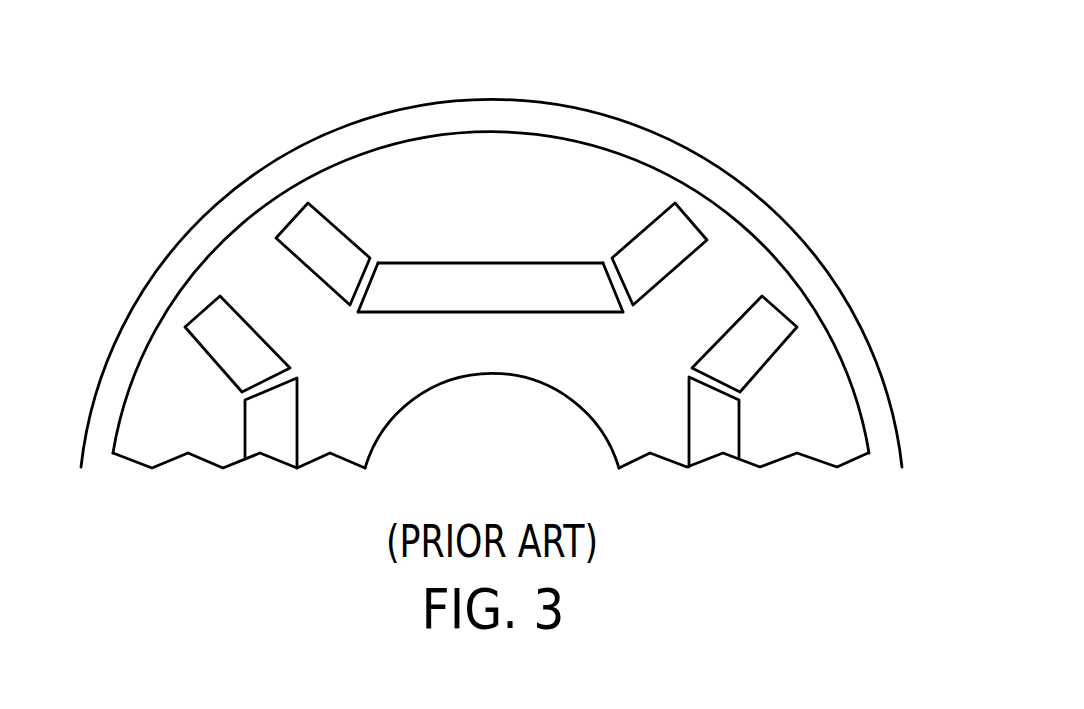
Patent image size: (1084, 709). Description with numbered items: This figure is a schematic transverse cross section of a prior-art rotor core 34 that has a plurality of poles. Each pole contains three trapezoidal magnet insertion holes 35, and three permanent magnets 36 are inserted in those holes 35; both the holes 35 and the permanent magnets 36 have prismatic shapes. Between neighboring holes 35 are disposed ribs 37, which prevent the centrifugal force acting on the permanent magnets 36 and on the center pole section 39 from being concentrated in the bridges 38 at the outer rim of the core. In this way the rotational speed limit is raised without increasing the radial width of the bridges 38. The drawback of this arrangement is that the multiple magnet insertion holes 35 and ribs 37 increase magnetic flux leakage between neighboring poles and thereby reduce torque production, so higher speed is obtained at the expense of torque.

The rotor core 34 is at (814, 227).
The magnet insertion hole 35 is at (266, 224).
The permanent magnet 36 is at (313, 255).
The rib 37 is at (375, 262).
The bridge 38 is at (298, 203).
The center pole section 39 is at (493, 162).